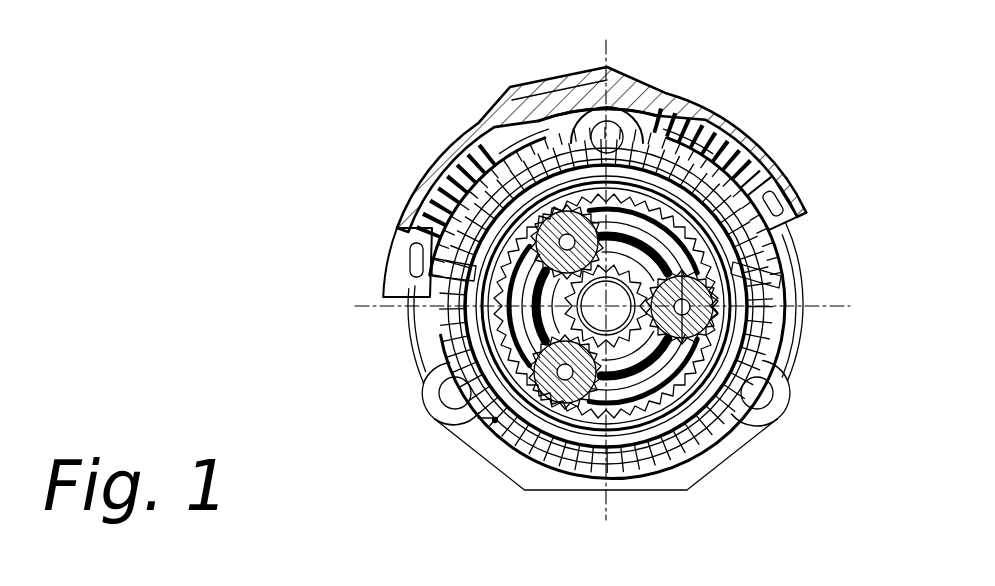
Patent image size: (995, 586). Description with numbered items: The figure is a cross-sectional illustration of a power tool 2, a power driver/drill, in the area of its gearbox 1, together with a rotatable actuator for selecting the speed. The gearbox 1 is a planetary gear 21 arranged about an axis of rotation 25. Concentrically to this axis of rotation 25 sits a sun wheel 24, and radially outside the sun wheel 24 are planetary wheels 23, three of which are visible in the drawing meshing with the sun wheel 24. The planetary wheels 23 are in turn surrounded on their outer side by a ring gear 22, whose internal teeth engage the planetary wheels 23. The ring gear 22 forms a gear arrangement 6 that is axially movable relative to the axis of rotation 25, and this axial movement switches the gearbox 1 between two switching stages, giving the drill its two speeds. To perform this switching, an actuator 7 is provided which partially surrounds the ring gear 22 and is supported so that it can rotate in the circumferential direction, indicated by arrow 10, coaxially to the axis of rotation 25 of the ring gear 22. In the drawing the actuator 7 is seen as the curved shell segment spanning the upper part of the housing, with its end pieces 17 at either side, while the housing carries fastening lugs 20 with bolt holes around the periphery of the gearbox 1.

The gearbox 1 is at (508, 435).
The power tool 2 is at (347, 162).
The gear arrangement 6 is at (607, 415).
The actuator 7 is at (613, 77).
The arrow 10 is at (537, 25).
The end piece 17 is at (420, 232).
The fastening lug 20 is at (478, 428).
The planetary gear 21 is at (545, 412).
The ring gear 22 is at (603, 398).
The planetary wheels 23 is at (747, 330).
The sun wheel 24 is at (665, 383).
The axis of rotation 25 is at (475, 343).